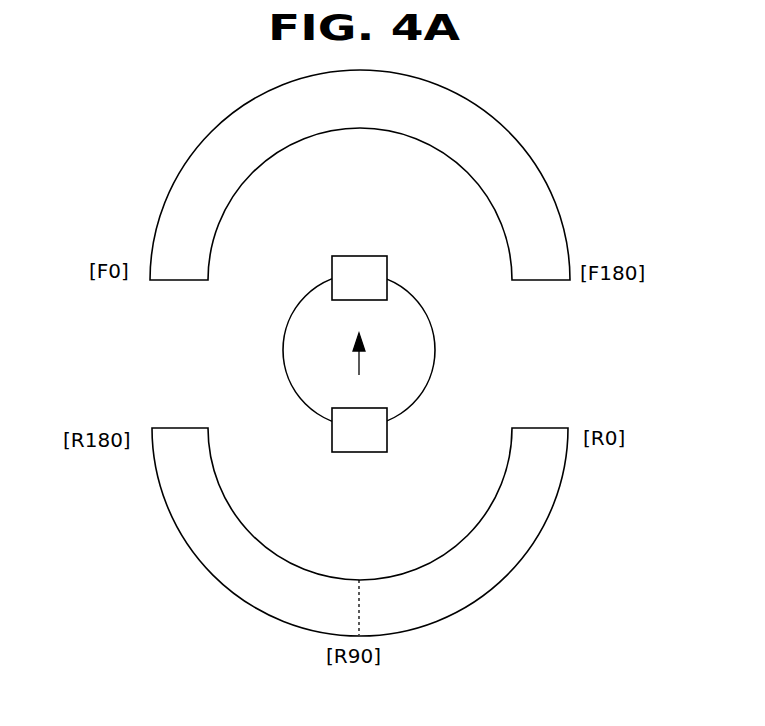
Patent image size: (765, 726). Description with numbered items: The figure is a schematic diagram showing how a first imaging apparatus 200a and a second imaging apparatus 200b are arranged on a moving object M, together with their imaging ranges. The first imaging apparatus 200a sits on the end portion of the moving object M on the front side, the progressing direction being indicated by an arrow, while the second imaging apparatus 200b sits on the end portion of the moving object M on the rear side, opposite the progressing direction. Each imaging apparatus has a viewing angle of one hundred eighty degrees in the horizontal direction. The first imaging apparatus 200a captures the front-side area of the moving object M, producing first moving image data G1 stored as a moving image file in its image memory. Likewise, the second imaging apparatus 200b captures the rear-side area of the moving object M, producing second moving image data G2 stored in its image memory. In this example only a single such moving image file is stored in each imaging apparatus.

The first moving image data G1 is at (560, 223).
The second moving image data G2 is at (558, 495).
The moving object M is at (435, 340).
The first imaging apparatus 200a is at (357, 256).
The second imaging apparatus 200b is at (357, 452).